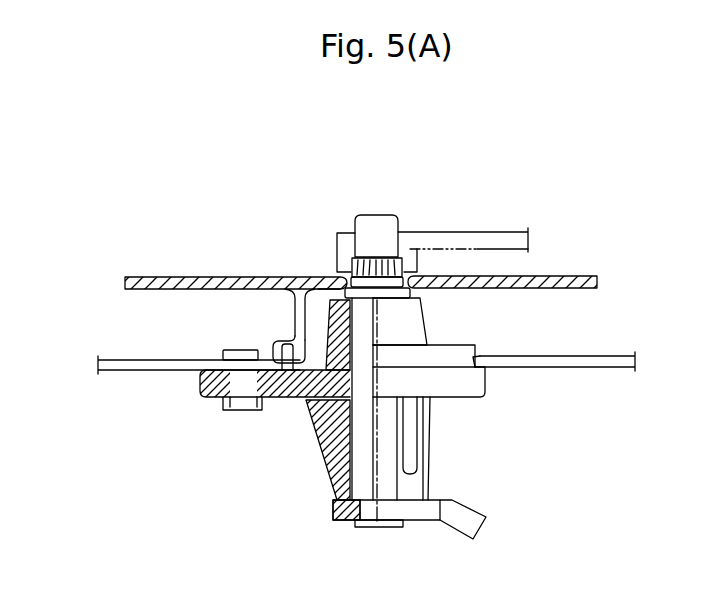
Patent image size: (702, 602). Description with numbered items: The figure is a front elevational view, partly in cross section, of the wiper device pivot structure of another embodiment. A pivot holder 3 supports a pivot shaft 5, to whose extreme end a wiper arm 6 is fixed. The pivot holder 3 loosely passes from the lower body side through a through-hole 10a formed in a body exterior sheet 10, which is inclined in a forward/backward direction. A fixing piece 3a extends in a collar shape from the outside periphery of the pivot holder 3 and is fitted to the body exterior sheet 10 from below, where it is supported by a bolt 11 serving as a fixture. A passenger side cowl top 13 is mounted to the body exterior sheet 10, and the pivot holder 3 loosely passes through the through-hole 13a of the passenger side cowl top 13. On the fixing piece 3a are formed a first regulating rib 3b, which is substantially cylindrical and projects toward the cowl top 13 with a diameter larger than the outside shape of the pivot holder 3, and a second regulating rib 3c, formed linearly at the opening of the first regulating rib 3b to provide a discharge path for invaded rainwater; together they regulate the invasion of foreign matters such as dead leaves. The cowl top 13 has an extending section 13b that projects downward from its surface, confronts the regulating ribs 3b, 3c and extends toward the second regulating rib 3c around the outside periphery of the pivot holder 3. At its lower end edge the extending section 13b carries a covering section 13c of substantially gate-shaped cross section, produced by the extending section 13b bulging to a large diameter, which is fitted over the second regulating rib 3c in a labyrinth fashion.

The pivot holder 3 is at (320, 465).
The fixing piece 3a is at (270, 400).
The first regulating rib 3b is at (457, 352).
The second regulating rib 3c is at (288, 400).
The pivot shaft 5 is at (387, 215).
The wiper arm 6 is at (484, 230).
The body exterior sheet 10 is at (565, 362).
The through-hole 10a is at (473, 353).
The bolt 11 is at (220, 352).
The passenger side cowl top 13 is at (232, 277).
The through-hole 13a is at (343, 275).
The extending section 13b is at (297, 312).
The covering section 13c is at (283, 339).